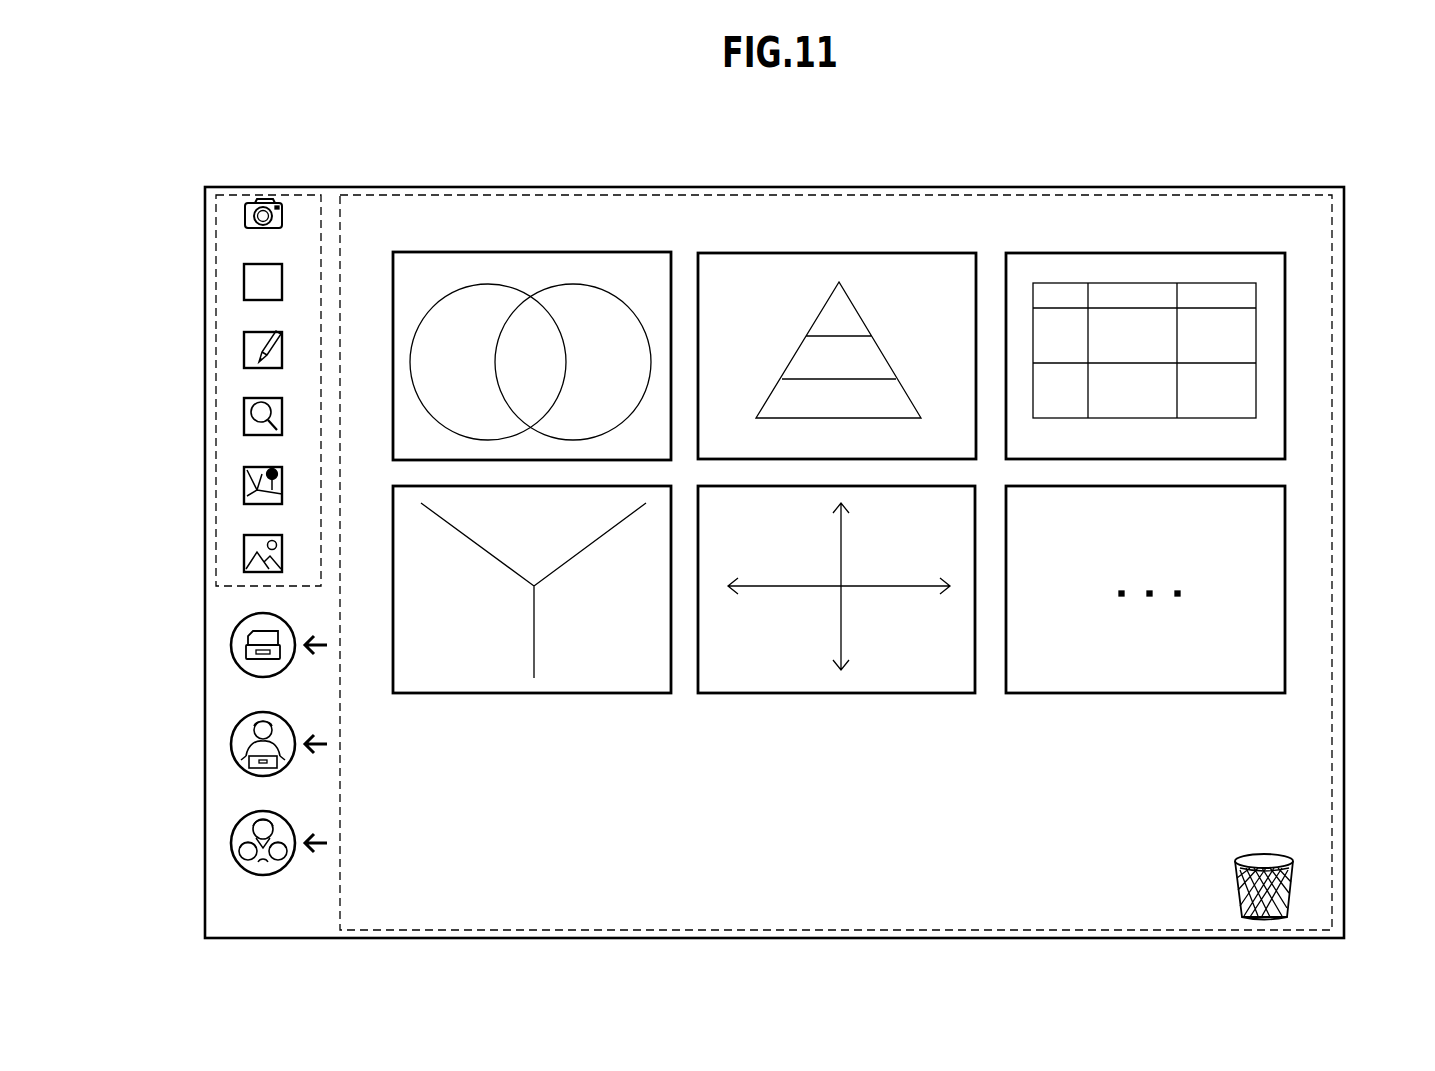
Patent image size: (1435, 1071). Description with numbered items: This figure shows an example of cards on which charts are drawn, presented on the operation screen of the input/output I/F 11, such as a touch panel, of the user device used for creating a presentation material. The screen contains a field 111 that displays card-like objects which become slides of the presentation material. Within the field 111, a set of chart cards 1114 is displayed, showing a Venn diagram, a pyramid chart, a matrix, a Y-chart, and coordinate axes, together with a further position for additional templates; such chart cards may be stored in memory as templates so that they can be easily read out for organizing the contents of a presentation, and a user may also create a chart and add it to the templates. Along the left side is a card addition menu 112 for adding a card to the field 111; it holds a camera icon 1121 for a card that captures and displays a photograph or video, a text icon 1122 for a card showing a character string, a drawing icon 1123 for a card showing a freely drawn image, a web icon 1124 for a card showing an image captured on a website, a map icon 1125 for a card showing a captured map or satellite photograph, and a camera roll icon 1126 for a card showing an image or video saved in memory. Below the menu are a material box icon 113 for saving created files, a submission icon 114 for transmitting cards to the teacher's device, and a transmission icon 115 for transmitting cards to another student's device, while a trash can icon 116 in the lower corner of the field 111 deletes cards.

The input/output I/F 11 is at (1344, 282).
The field 111 is at (1332, 449).
The card addition menu 112 is at (302, 199).
The camera icon 1121 is at (245, 212).
The text icon 1122 is at (244, 279).
The drawing icon 1123 is at (244, 349).
The web icon 1124 is at (244, 414).
The map icon 1125 is at (244, 490).
The camera roll icon 1126 is at (244, 557).
The template panel 1114 is at (530, 252).
The material box icon 113 is at (231, 641).
The submission icon 114 is at (231, 738).
The transmission icon 115 is at (231, 842).
The trash can icon 116 is at (1294, 878).